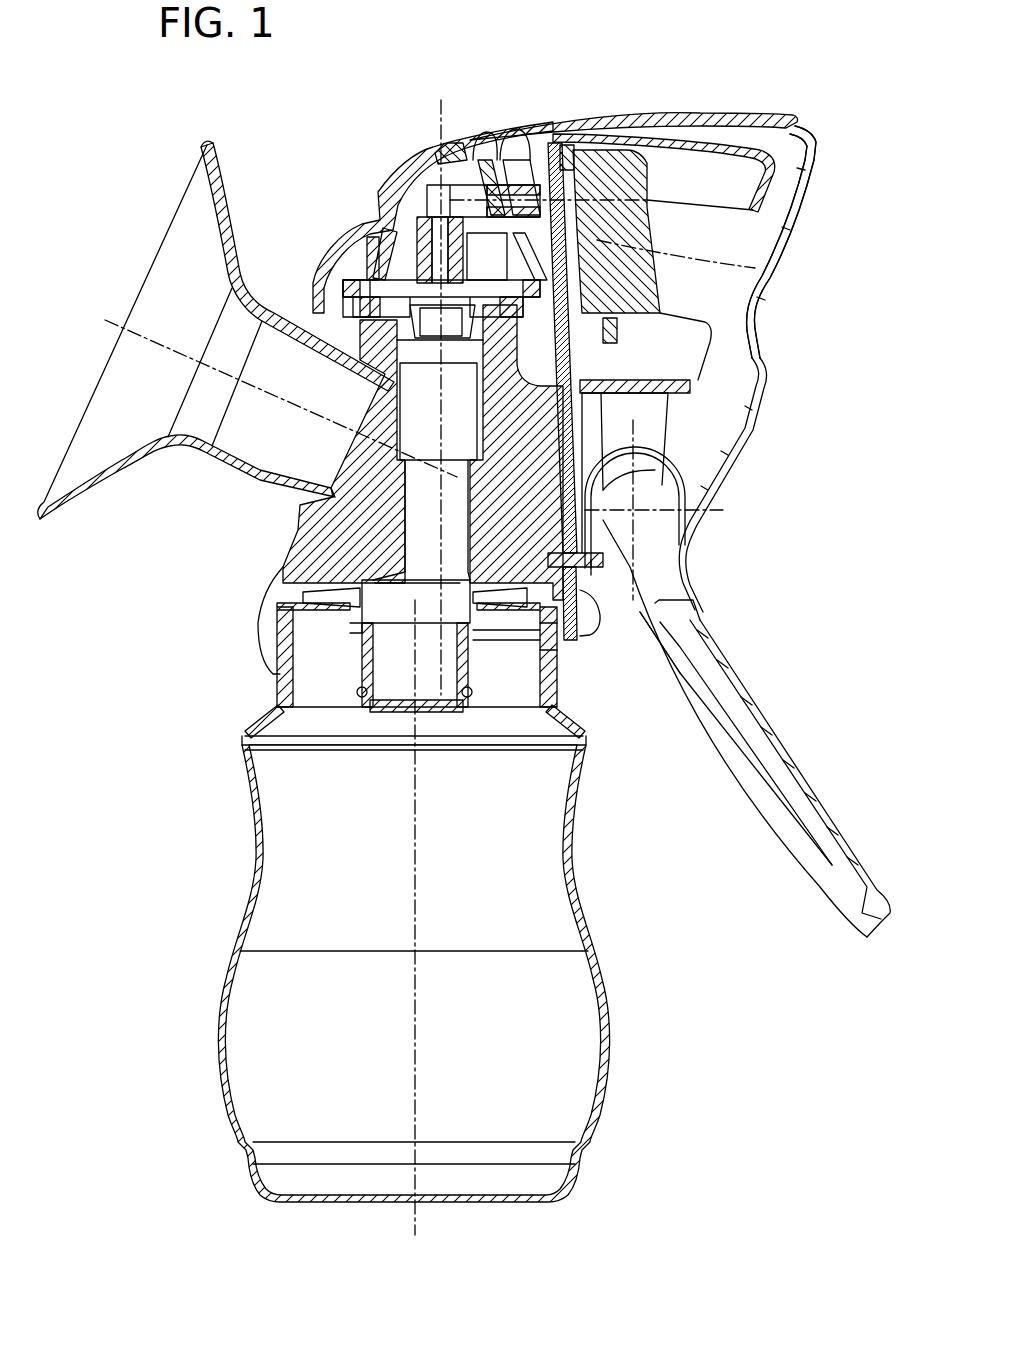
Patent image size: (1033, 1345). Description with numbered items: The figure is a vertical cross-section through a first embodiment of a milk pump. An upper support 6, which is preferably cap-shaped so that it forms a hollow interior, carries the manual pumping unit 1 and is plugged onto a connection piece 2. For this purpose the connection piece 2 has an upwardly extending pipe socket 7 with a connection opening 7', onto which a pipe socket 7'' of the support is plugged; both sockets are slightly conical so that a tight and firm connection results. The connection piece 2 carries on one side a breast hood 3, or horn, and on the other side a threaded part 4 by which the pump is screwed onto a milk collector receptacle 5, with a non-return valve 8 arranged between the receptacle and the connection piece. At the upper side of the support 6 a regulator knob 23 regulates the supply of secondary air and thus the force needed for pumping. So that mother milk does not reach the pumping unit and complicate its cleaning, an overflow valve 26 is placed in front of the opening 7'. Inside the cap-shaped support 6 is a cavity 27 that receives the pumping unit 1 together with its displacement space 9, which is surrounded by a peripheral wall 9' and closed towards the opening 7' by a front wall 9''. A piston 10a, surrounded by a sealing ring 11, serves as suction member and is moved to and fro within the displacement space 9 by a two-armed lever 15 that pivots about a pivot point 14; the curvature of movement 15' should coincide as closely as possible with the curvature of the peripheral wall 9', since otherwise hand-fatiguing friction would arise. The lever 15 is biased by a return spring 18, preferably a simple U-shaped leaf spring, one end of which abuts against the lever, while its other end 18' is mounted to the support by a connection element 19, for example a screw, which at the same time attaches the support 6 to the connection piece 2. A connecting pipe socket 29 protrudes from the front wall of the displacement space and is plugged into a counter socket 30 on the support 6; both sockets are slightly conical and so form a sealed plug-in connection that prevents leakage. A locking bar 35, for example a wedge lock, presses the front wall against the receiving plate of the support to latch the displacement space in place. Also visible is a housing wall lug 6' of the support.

The manual pumping unit 1 is at (753, 137).
The connection piece 2 is at (366, 341).
The breast hood 3 is at (176, 276).
The threaded part 4 is at (256, 620).
The milk collector receptacle 5 is at (247, 828).
The upper support 6 is at (575, 336).
The housing wall lug 6' is at (593, 652).
The pipe socket 7 is at (430, 237).
The connection opening 7' is at (434, 144).
The pipe socket of the support 7'' is at (355, 246).
The non-return valve 8 is at (478, 697).
The displacement space 9 is at (663, 293).
The peripheral wall 9' is at (664, 123).
The front wall 9'' is at (550, 100).
The piston 10a is at (606, 325).
The sealing ring 11 is at (583, 123).
The pivot point 14 is at (637, 507).
The lever 15 is at (764, 485).
The curvature of movement 15' is at (798, 242).
The return spring 18 is at (648, 489).
The other end of the spring 18' is at (614, 630).
The connection element 19 is at (638, 612).
The regulator knob 23 is at (392, 170).
The overflow valve 26 is at (456, 409).
The cavity 27 is at (500, 168).
The connecting pipe socket 29 is at (488, 172).
The counter socket 30 is at (512, 160).
The locking bar 35 is at (545, 264).